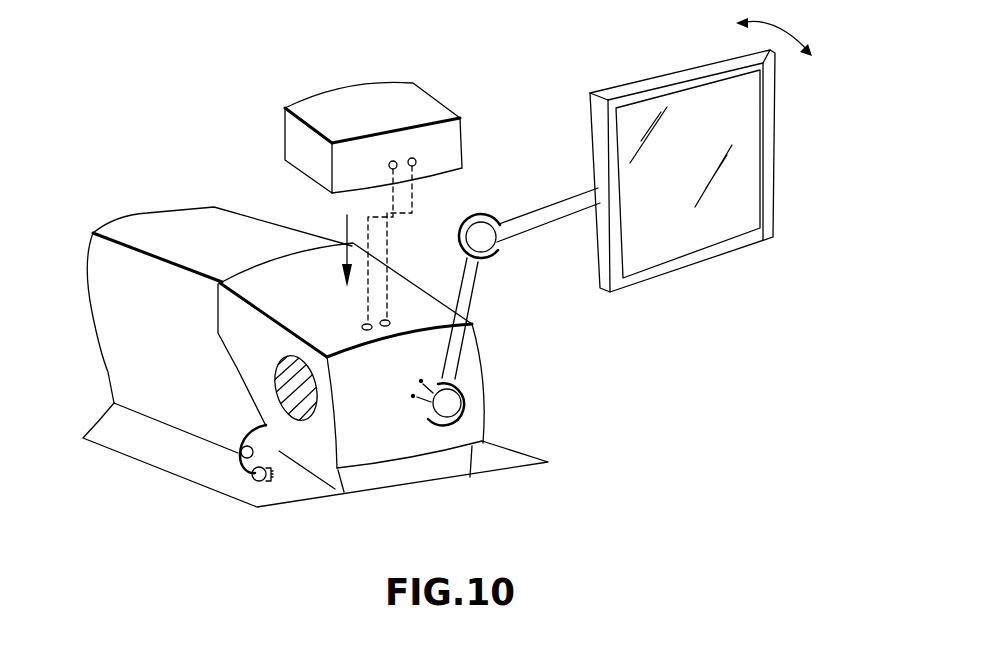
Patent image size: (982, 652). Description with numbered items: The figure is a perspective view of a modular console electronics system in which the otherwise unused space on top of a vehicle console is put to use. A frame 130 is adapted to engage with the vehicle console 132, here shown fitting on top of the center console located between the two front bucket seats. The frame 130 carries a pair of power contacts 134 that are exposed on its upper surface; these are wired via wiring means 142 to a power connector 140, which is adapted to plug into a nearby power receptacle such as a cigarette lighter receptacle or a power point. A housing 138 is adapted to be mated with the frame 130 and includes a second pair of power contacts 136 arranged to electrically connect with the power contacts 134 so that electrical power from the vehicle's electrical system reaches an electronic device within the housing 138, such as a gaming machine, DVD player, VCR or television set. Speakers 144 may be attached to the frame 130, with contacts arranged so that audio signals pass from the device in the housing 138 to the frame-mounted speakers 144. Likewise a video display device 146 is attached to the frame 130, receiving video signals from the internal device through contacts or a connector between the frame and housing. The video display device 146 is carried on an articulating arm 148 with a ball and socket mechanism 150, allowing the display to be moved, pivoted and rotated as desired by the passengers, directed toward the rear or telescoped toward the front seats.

The frame 130 is at (224, 344).
The vehicle console 132 is at (150, 457).
The power contacts 134 is at (371, 325).
The contacts 136 is at (396, 162).
The housing 138 is at (427, 97).
The power connector 140 is at (258, 477).
The wiring means 142 is at (236, 462).
The speakers 144 is at (335, 472).
The video display device 146 is at (750, 133).
The articulating arm 148 is at (475, 297).
The ball and socket mechanism 150 is at (497, 221).